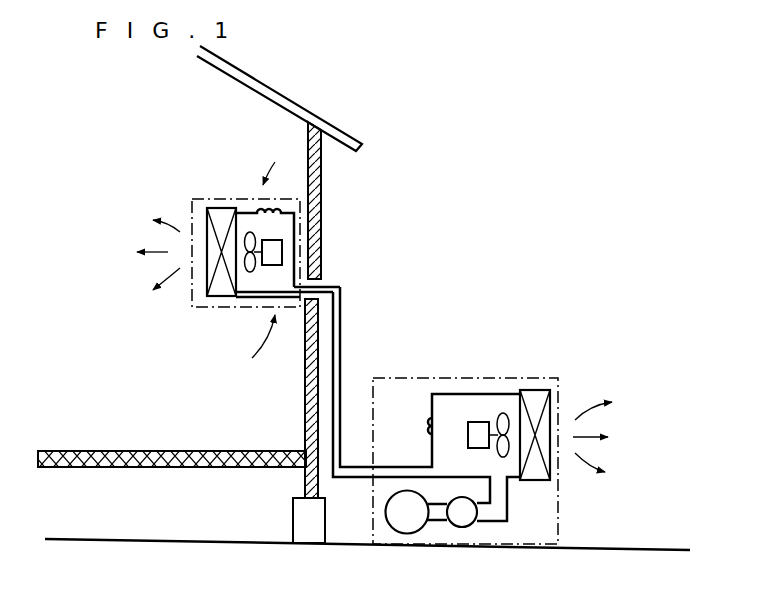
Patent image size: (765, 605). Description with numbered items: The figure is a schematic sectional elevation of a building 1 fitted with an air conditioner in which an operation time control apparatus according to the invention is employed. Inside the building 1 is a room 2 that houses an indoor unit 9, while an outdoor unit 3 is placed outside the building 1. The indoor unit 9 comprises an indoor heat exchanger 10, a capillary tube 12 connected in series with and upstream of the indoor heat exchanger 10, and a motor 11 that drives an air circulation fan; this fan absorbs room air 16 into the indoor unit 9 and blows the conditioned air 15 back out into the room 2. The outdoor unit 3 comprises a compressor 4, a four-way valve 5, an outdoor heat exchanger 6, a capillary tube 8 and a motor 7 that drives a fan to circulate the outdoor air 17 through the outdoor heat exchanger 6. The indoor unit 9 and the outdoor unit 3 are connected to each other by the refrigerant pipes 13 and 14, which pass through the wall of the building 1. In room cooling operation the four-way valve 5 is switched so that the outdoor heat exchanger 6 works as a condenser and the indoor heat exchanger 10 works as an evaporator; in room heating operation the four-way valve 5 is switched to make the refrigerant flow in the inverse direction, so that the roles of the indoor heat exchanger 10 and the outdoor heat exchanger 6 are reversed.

The building 1 is at (320, 207).
The room 2 is at (227, 246).
The outdoor unit 3 is at (550, 380).
The compressor 4 is at (408, 525).
The four-way valve 5 is at (463, 520).
The outdoor heat exchanger 6 is at (537, 482).
The motor 7 is at (468, 432).
The capillary tube 8 is at (432, 425).
The indoor unit 9 is at (217, 308).
The indoor heat exchanger 10 is at (222, 208).
The motor 11 is at (270, 266).
The capillary tube 12 is at (277, 212).
The refrigerant pipe 13 is at (340, 288).
The refrigerant pipe 14 is at (340, 318).
The conditioned air 15 is at (160, 262).
The air 16 is at (250, 346).
The outdoor air 17 is at (608, 437).